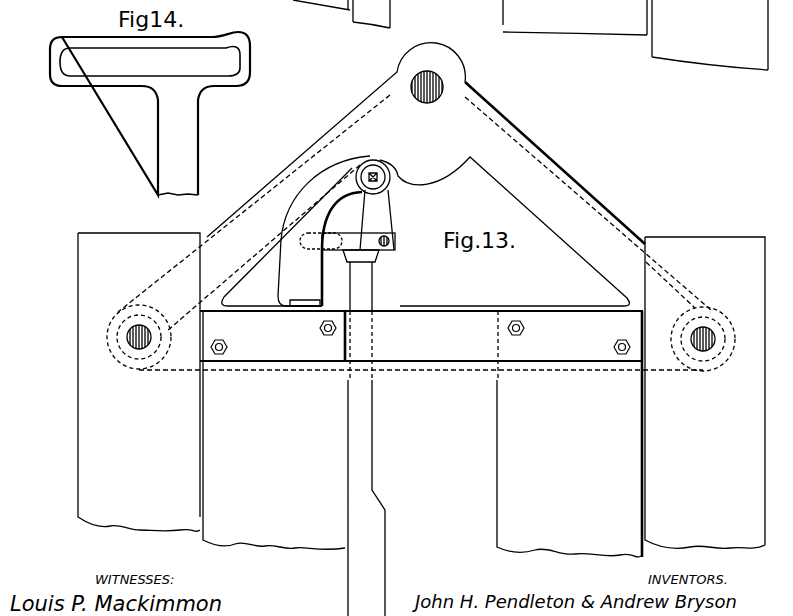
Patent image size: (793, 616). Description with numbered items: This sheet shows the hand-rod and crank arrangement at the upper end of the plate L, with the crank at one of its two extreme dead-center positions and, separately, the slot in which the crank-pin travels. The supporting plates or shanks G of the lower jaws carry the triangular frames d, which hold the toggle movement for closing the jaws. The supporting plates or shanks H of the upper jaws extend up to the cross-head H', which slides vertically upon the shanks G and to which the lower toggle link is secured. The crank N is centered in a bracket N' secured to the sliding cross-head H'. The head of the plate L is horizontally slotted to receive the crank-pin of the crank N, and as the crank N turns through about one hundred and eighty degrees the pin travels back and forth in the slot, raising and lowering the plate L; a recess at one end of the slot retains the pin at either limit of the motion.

In FIG. 13, the triangular frame d is at (421, 207).
In FIG. 13, the crank N is at (358, 205).
In FIG. 13, the bracket N' is at (324, 231).
In FIG. 13, the supporting plate or shank of the upper jaw H is at (422, 434).
In FIG. 13, the cross-head H' is at (421, 345).
In FIG. 13, the supporting plate or shank of the lower jaw G is at (421, 390).
In FIG. 14, the plate L is at (150, 113).
In FIG. 13, the plate L is at (364, 433).